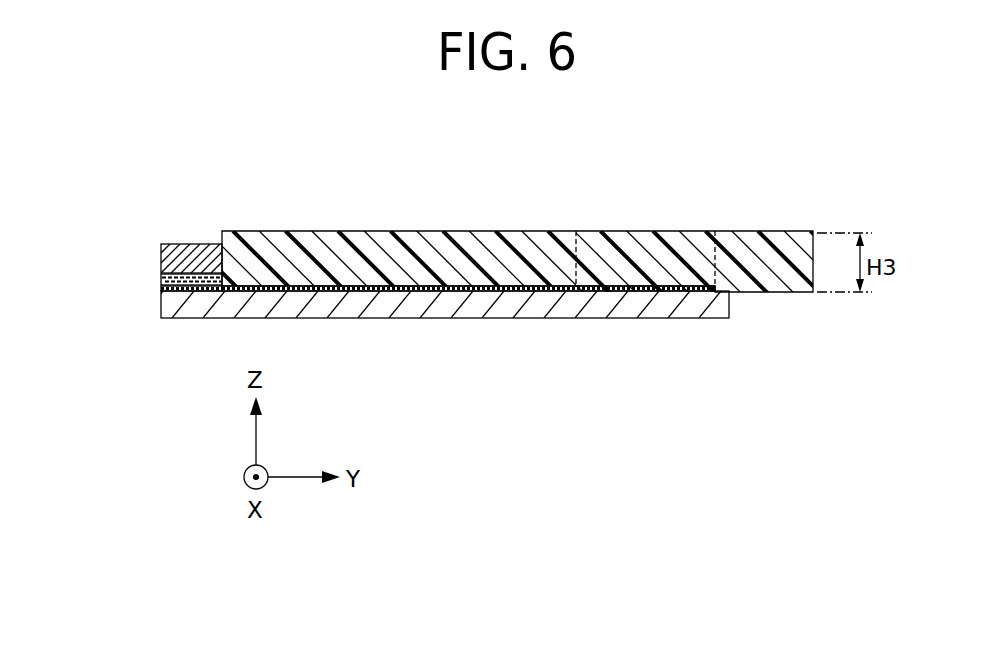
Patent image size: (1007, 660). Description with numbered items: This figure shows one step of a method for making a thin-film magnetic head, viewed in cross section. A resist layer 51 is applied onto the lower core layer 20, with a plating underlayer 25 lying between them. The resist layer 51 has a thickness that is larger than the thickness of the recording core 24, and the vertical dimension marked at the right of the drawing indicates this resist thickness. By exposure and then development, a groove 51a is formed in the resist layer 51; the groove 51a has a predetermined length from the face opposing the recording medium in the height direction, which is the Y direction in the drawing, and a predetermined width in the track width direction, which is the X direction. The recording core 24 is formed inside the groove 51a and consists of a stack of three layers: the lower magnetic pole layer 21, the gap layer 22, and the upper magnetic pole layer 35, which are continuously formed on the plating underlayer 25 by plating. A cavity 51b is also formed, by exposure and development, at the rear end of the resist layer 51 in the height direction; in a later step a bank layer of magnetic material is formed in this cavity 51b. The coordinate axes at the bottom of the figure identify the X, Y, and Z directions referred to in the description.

The resist layer 51 is at (526, 227).
The groove 51a is at (195, 241).
The cavity 51b is at (638, 258).
The recording core 24 is at (148, 275).
The upper magnetic pole layer 35 is at (161, 258).
The gap layer 22 is at (161, 279).
The lower magnetic pole layer 21 is at (161, 309).
The plating underlayer 25 is at (400, 292).
The lower core layer 20 is at (505, 303).